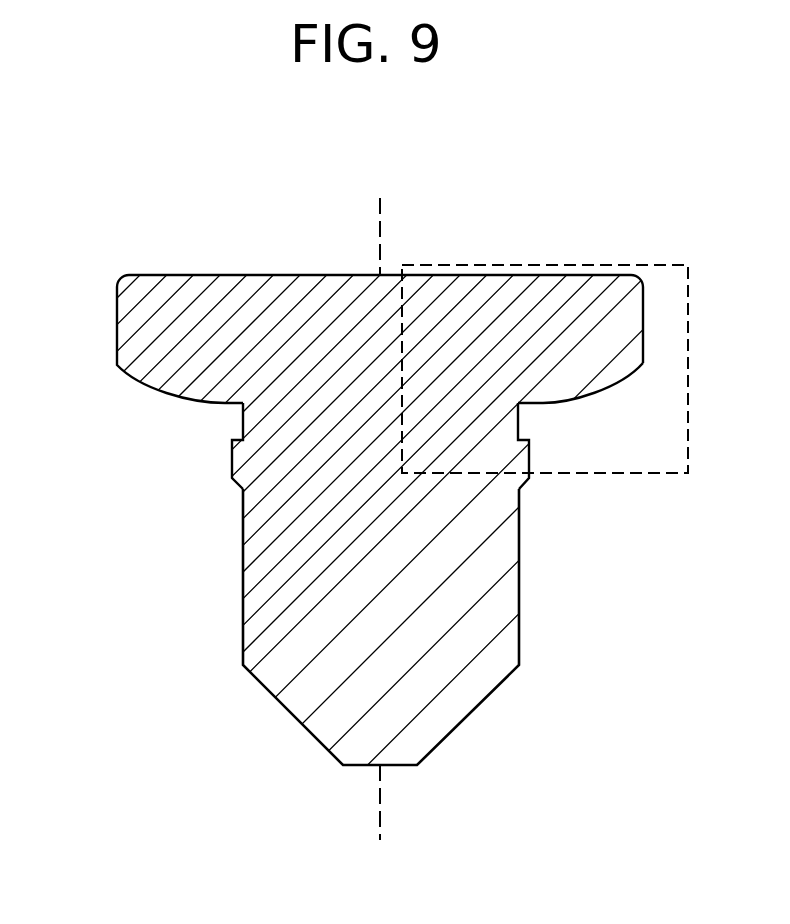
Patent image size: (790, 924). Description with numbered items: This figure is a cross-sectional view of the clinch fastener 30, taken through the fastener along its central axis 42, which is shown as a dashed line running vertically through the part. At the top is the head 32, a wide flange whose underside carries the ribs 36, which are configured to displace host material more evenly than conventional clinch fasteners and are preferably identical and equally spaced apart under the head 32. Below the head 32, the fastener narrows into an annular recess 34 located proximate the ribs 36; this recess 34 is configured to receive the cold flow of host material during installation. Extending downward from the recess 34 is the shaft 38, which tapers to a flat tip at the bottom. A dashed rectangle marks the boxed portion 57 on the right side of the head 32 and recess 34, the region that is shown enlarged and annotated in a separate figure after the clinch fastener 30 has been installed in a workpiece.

The clinch fastener 30 is at (164, 508).
The head 32 is at (122, 340).
The annular recess 34 is at (242, 420).
The ribs 36 is at (575, 403).
The shaft 38 is at (505, 622).
The central axis 42 is at (381, 807).
The boxed portion 57 is at (660, 473).